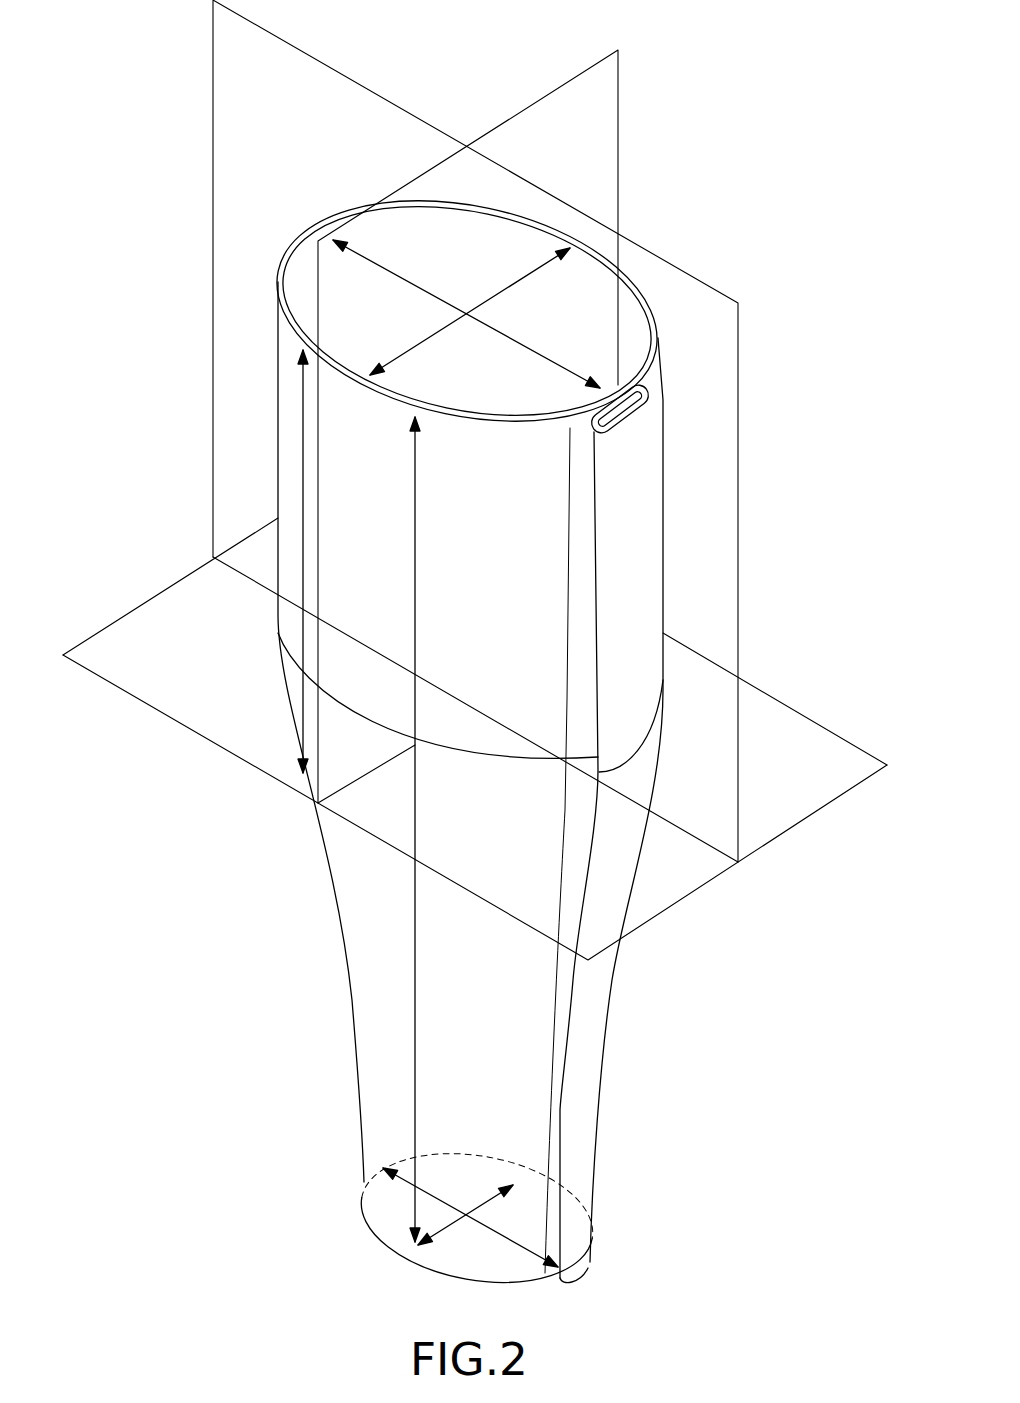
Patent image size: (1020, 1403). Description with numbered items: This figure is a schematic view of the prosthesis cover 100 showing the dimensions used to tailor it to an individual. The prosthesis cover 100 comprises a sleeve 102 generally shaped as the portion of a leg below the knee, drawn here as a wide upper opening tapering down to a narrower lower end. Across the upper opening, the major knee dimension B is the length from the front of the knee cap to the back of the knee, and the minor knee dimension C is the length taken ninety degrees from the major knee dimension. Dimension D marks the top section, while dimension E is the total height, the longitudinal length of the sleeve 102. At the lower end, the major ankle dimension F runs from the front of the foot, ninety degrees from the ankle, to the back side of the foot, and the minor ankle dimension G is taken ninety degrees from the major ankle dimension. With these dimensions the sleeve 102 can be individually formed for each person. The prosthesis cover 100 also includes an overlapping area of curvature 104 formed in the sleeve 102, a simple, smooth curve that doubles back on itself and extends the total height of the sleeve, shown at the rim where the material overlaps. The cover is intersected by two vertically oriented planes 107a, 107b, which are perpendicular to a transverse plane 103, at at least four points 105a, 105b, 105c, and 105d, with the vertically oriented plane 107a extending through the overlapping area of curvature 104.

The prosthesis cover 100 is at (610, 263).
The sleeve 102 is at (280, 438).
The transverse plane 103 is at (797, 730).
The overlapping area of curvature 104 is at (637, 387).
The first point 105a is at (325, 230).
The second point 105b is at (610, 390).
The third point 105c is at (642, 392).
The fourth point 105d is at (637, 425).
The vertically oriented plane 107a is at (240, 228).
The vertically oriented plane 107b is at (587, 133).
The major knee dimension B is at (405, 277).
The minor knee dimension C is at (400, 358).
The top section D is at (303, 500).
The total height E is at (415, 822).
The major ankle dimension F is at (430, 1190).
The minor ankle dimension G is at (450, 1232).